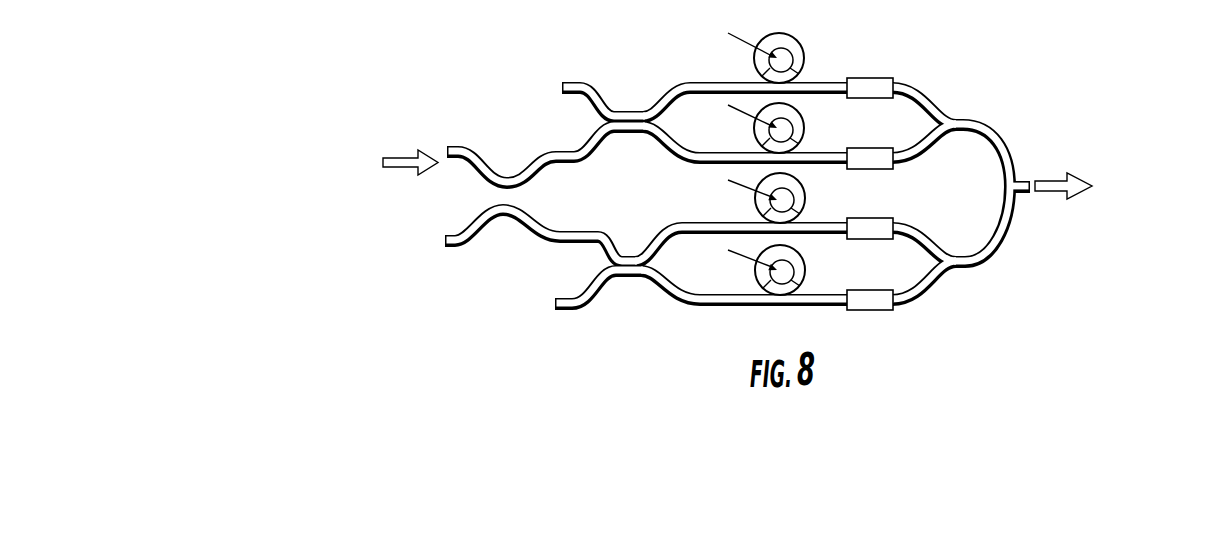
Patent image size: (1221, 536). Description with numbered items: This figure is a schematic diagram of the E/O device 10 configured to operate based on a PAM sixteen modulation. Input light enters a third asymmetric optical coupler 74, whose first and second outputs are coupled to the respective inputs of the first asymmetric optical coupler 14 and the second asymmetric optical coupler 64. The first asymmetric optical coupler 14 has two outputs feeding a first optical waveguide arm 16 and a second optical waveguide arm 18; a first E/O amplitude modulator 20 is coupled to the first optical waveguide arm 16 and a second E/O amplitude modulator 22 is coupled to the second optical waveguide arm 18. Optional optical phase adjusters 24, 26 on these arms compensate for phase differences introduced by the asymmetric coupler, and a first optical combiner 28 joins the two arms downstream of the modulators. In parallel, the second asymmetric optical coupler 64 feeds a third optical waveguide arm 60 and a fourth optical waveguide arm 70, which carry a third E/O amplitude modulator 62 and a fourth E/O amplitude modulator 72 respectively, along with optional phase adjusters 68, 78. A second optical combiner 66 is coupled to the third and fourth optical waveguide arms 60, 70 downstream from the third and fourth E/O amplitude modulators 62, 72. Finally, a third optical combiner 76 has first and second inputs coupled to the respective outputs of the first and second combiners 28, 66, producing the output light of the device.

The electro-optic (E/O) device 10 is at (423, 80).
The first asymmetric optical coupler 14 is at (623, 103).
The first optical waveguide arm 16 is at (668, 91).
The second optical waveguide arm 18 is at (660, 152).
The first E/O amplitude modulator 20 is at (797, 40).
The second E/O amplitude modulator 22 is at (806, 124).
The optical phase adjuster 24 is at (891, 78).
The optical phase adjuster 26 is at (890, 148).
The first optical combiner 28 is at (961, 118).
The third optical waveguide arm 60 is at (652, 244).
The third E/O amplitude modulator 62 is at (807, 194).
The second asymmetric optical coupler 64 is at (623, 285).
The second optical combiner 66 is at (961, 267).
The phase adjuster 68 is at (891, 221).
The fourth optical waveguide arm 70 is at (663, 298).
The fourth E/O amplitude modulator 72 is at (807, 267).
The third asymmetric optical coupler 74 is at (500, 223).
The third optical combiner 76 is at (1017, 178).
The phase adjuster 78 is at (892, 289).